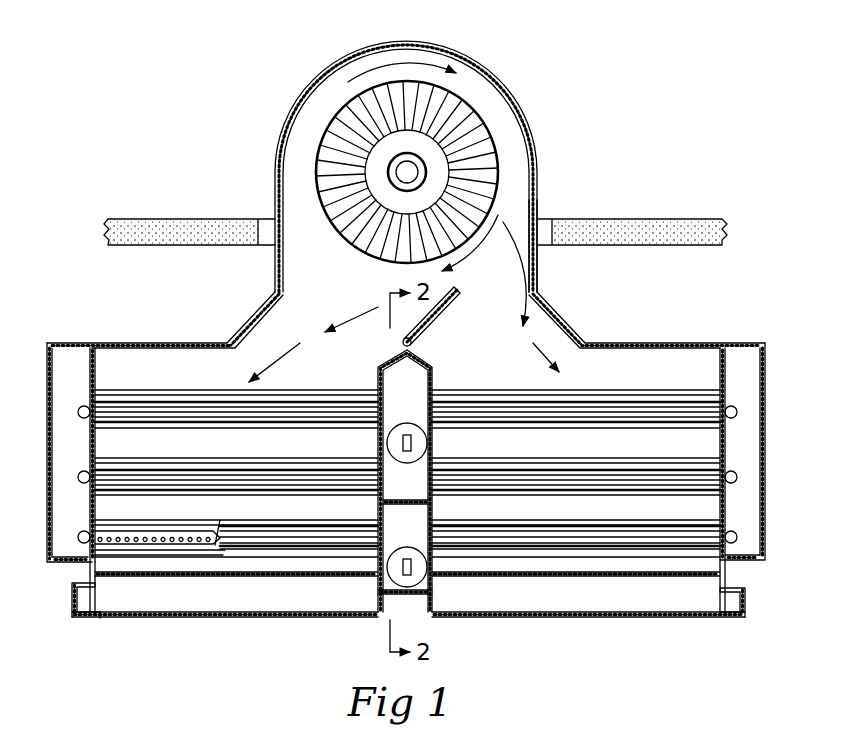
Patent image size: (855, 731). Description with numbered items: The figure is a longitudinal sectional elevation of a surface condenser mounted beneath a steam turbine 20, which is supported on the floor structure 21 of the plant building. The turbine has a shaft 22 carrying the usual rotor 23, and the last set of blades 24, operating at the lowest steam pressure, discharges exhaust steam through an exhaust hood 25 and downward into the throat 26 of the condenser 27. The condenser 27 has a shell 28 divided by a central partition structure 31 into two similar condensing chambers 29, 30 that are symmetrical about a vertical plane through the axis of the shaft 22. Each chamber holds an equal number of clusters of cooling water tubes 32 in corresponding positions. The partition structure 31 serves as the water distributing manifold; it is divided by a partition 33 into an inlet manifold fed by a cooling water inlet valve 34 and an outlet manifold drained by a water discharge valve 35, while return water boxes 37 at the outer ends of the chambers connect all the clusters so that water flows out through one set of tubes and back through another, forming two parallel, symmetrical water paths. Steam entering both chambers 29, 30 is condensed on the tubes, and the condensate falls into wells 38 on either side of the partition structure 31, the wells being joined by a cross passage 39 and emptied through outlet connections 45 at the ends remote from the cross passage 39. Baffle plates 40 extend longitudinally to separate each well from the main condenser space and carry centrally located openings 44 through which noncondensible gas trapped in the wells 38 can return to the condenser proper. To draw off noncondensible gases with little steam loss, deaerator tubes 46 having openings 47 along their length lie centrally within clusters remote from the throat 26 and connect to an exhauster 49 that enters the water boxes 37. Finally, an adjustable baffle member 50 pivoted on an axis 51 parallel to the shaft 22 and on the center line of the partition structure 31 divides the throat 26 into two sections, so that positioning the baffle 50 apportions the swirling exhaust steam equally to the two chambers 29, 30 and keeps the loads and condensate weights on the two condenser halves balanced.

The steam turbine 20 is at (406, 196).
The floor structure 21 is at (173, 223).
The shaft 22 is at (410, 178).
The rotor 23 is at (414, 168).
The last set of blades 24 is at (478, 145).
The exhaust hood 25 is at (538, 147).
The throat 26 is at (254, 317).
The condenser 27 is at (157, 341).
The shell 28 is at (618, 342).
The condensing chamber 29 is at (206, 454).
The condensing chamber 30 is at (554, 452).
The partition structure 31 is at (433, 444).
The clusters of cooling water tubes 32 is at (305, 468).
The partition 33 is at (425, 499).
The cooling water inlet valve 34 is at (393, 430).
The water discharge valve 35 is at (392, 555).
The return water boxes 37 is at (49, 366).
The wells 38 is at (127, 605).
The cross passage 39 is at (426, 618).
The baffle plates 40 is at (198, 574).
The openings 44 is at (357, 578).
The outlet connections 45 is at (88, 614).
The deaerator tubes 46 is at (195, 532).
The openings 47 is at (150, 534).
The exhauster 49 is at (80, 535).
The adjustable baffle member 50 is at (449, 312).
The axis 51 is at (413, 344).